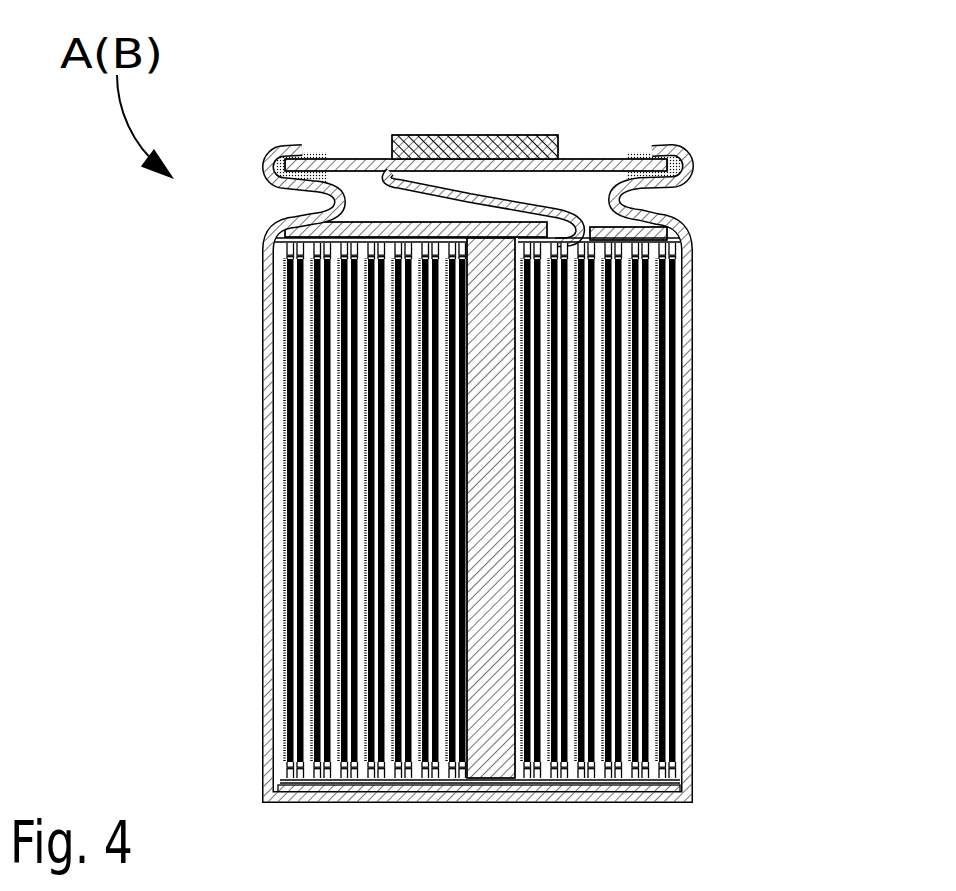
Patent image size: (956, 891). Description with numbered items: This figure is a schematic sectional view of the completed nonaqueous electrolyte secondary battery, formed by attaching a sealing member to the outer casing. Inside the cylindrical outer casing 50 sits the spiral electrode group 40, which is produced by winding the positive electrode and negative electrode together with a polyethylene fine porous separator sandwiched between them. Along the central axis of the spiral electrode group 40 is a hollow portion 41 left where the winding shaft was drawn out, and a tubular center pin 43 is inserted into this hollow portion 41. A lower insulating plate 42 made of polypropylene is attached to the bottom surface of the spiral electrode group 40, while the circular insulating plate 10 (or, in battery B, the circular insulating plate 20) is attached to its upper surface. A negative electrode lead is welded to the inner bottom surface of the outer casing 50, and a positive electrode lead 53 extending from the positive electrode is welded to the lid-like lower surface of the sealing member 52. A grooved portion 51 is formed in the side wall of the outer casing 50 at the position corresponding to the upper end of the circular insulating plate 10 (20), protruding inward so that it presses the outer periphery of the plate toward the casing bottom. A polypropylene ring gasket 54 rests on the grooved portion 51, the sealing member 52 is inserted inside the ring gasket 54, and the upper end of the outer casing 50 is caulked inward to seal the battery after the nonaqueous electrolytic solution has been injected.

The circular insulating plate 10 is at (380, 287).
The circular insulating plate 20 is at (325, 228).
The spiral electrode group 40 is at (622, 395).
The hollow portion 41 is at (488, 597).
The lower insulating plate 42 is at (273, 788).
The tubular center pin 43 is at (306, 508).
The outer casing 50 is at (693, 603).
The grooved portion 51 is at (683, 198).
The sealing member 52 is at (418, 135).
The positive electrode lead 53 is at (522, 202).
The ring gasket 54 is at (680, 185).